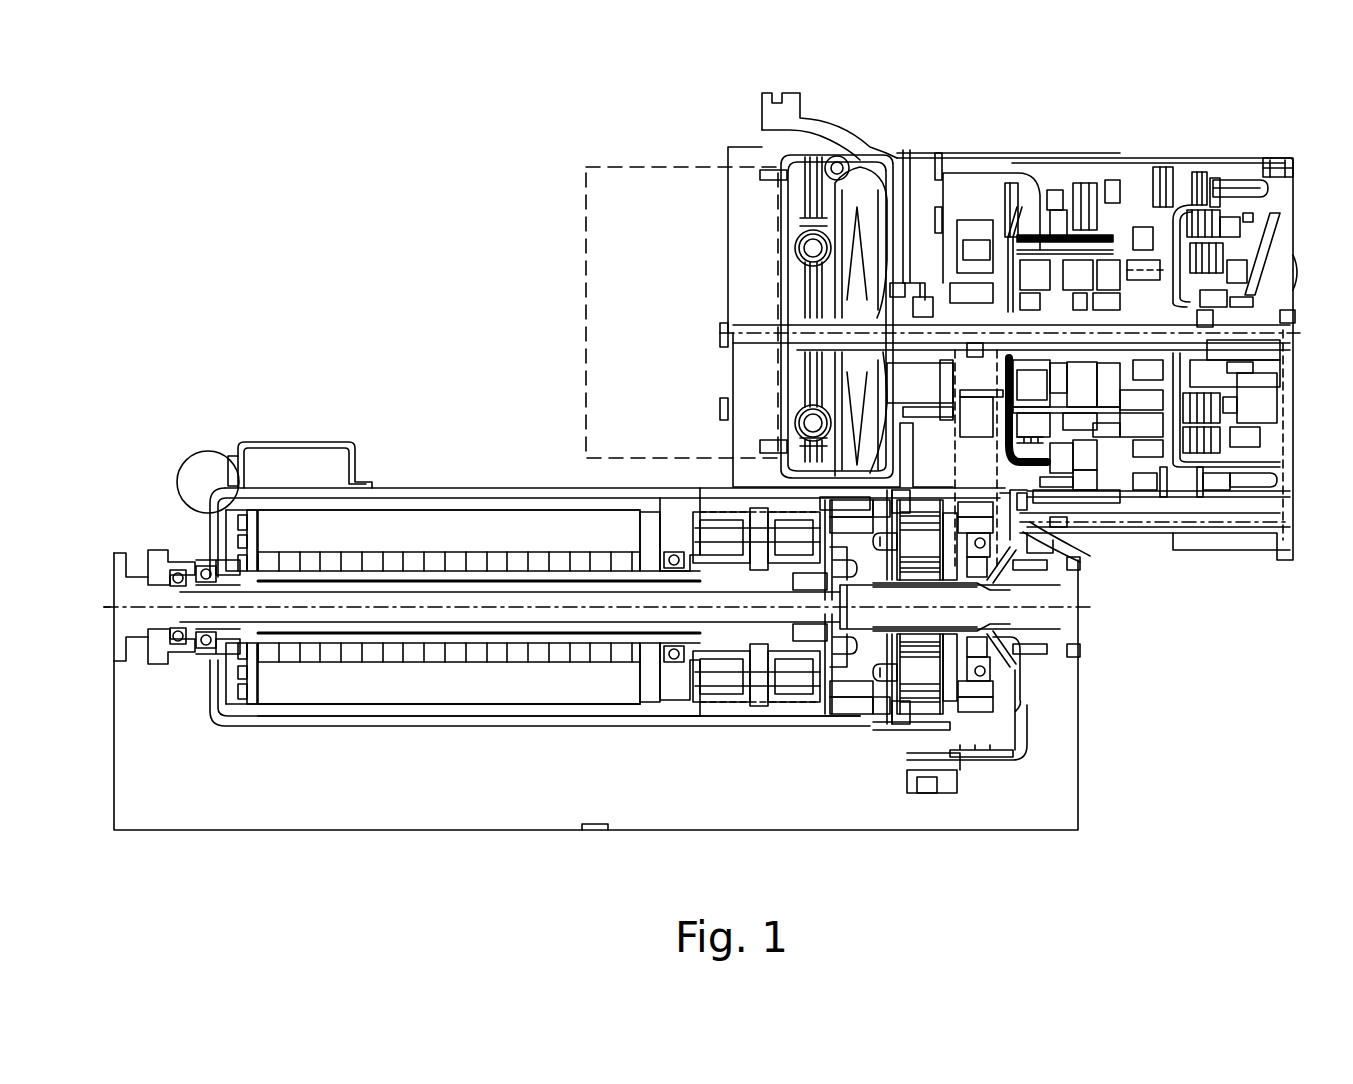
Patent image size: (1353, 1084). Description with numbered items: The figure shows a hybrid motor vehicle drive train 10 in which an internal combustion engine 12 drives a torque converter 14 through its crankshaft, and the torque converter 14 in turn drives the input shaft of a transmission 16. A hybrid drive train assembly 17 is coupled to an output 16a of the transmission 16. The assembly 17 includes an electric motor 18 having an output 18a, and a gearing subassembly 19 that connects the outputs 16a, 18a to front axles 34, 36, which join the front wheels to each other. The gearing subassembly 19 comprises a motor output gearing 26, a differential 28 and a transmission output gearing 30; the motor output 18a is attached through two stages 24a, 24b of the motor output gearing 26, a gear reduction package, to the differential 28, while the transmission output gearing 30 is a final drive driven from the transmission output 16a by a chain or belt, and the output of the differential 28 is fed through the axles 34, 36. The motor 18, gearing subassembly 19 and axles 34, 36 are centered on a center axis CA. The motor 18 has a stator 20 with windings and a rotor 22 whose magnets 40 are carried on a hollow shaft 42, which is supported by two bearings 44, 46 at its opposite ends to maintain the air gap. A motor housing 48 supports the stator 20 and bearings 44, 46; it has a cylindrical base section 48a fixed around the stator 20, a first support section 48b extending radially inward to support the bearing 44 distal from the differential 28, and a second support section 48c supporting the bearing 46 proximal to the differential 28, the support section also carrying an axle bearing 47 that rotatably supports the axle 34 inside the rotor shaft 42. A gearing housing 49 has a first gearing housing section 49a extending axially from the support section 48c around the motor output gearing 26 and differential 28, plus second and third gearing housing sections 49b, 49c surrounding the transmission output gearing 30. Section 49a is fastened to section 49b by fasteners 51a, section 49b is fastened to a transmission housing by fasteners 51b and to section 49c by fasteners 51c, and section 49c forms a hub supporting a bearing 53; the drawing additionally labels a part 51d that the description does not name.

The hybrid motor vehicle drive train 10 is at (322, 128).
The internal combustion engine 12 is at (680, 326).
The torque converter 14 is at (820, 125).
The transmission 16 is at (1180, 152).
The output 16a is at (1040, 532).
The hybrid drive train assembly 17 is at (1018, 810).
The electric motor 18 is at (483, 480).
The output 18a is at (660, 720).
The gearing subassembly 19 is at (578, 775).
The stator 20 is at (403, 503).
The rotor 22 is at (345, 545).
The stage 24a is at (718, 712).
The stage 24b is at (790, 715).
The motor output gearing 26 is at (755, 725).
The differential 28 is at (855, 735).
The transmission output gearing 30 is at (988, 738).
The front axle 34 is at (190, 645).
The front axle 36 is at (1063, 627).
The magnets 40 is at (480, 548).
The hollow shaft 42 is at (378, 648).
The bearing 44 is at (176, 545).
The bearing 46 is at (670, 542).
The axle bearing 47 is at (176, 575).
The motor housing 48 is at (206, 475).
The base section 48a is at (445, 722).
The first support section 48b is at (210, 692).
The second support section 48c is at (688, 650).
The gearing housing 49 is at (720, 488).
The first gearing housing section 49a is at (855, 748).
The second gearing housing section 49b is at (912, 762).
The third gearing housing section 49c is at (968, 757).
The fasteners 51a is at (895, 765).
The fasteners 51b is at (1010, 515).
The fasteners 51c is at (925, 782).
The fourth support portion 51d is at (1045, 680).
The bearing 53 is at (1000, 678).
The center axis CA is at (578, 600).